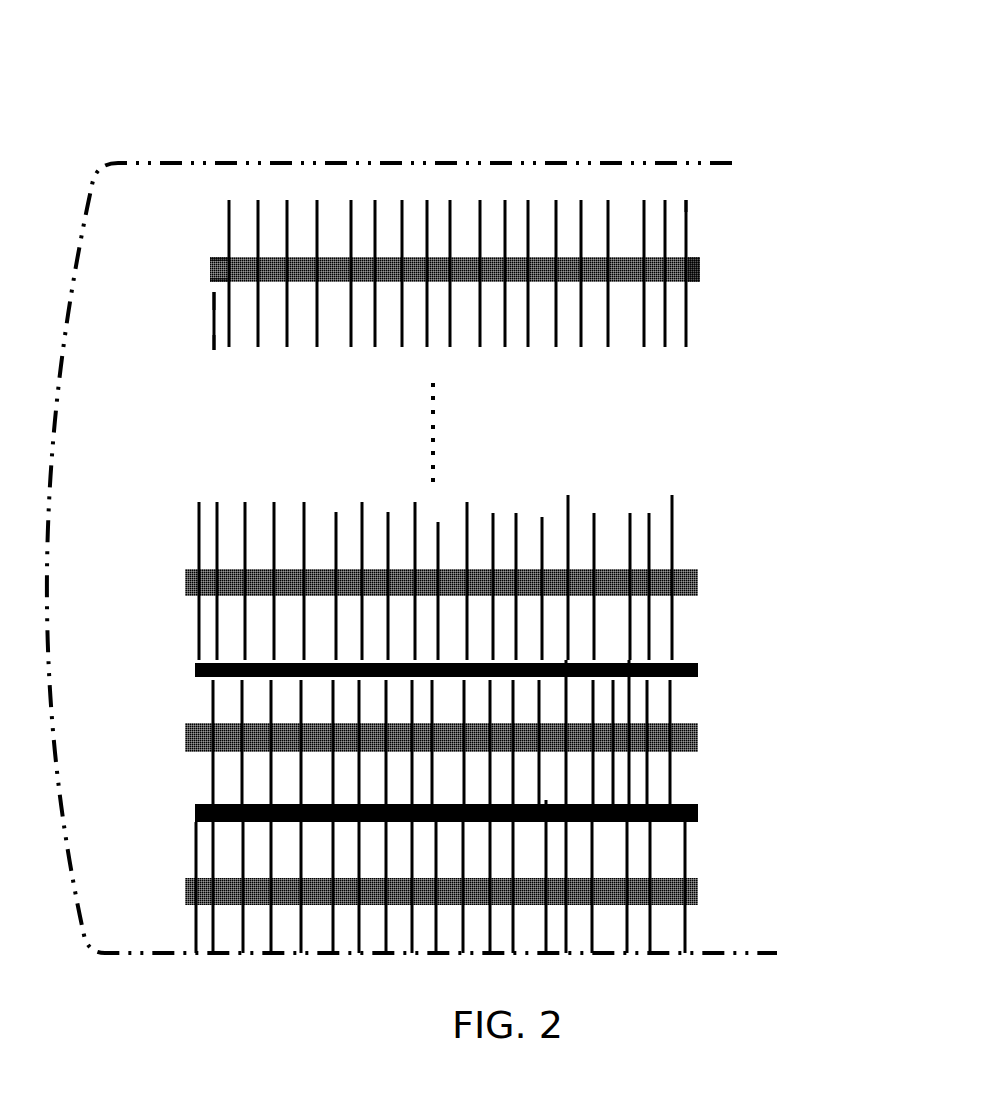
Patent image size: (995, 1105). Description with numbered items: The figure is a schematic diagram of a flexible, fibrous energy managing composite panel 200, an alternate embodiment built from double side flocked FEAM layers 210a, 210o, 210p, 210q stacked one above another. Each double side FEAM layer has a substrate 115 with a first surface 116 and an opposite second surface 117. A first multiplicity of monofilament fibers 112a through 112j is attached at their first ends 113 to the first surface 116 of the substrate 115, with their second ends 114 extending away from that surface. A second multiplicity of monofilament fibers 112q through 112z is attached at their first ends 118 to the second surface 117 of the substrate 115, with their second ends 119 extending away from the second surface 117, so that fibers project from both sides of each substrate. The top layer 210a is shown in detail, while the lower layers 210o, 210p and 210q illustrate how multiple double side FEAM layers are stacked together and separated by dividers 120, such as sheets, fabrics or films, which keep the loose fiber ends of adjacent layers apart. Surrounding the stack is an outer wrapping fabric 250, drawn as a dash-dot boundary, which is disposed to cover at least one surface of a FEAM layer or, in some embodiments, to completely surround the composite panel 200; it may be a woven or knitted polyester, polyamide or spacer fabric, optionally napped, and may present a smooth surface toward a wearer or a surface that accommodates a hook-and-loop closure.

The flexible, fibrous energy managing composite panel 200 is at (480, 118).
The outer wrapping fabric 250 is at (97, 953).
The double side flocked FEAM layer 210a is at (740, 227).
The double side flocked FEAM layer 210o is at (688, 565).
The double side flocked FEAM layer 210p is at (703, 683).
The double side flocked FEAM layer 210q is at (707, 822).
The monofilament fiber 112a is at (215, 329).
The monofilament fiber 112j is at (686, 345).
The monofilament fiber 112q is at (227, 222).
The monofilament fiber 112z is at (686, 226).
The first end 113 is at (205, 297).
The second end 114 is at (200, 349).
The substrate 115 is at (345, 285).
The first surface 116 is at (207, 288).
The second surface 117 is at (216, 255).
The first end 118 is at (686, 255).
The second end 119 is at (686, 202).
The divider 120 is at (703, 673).